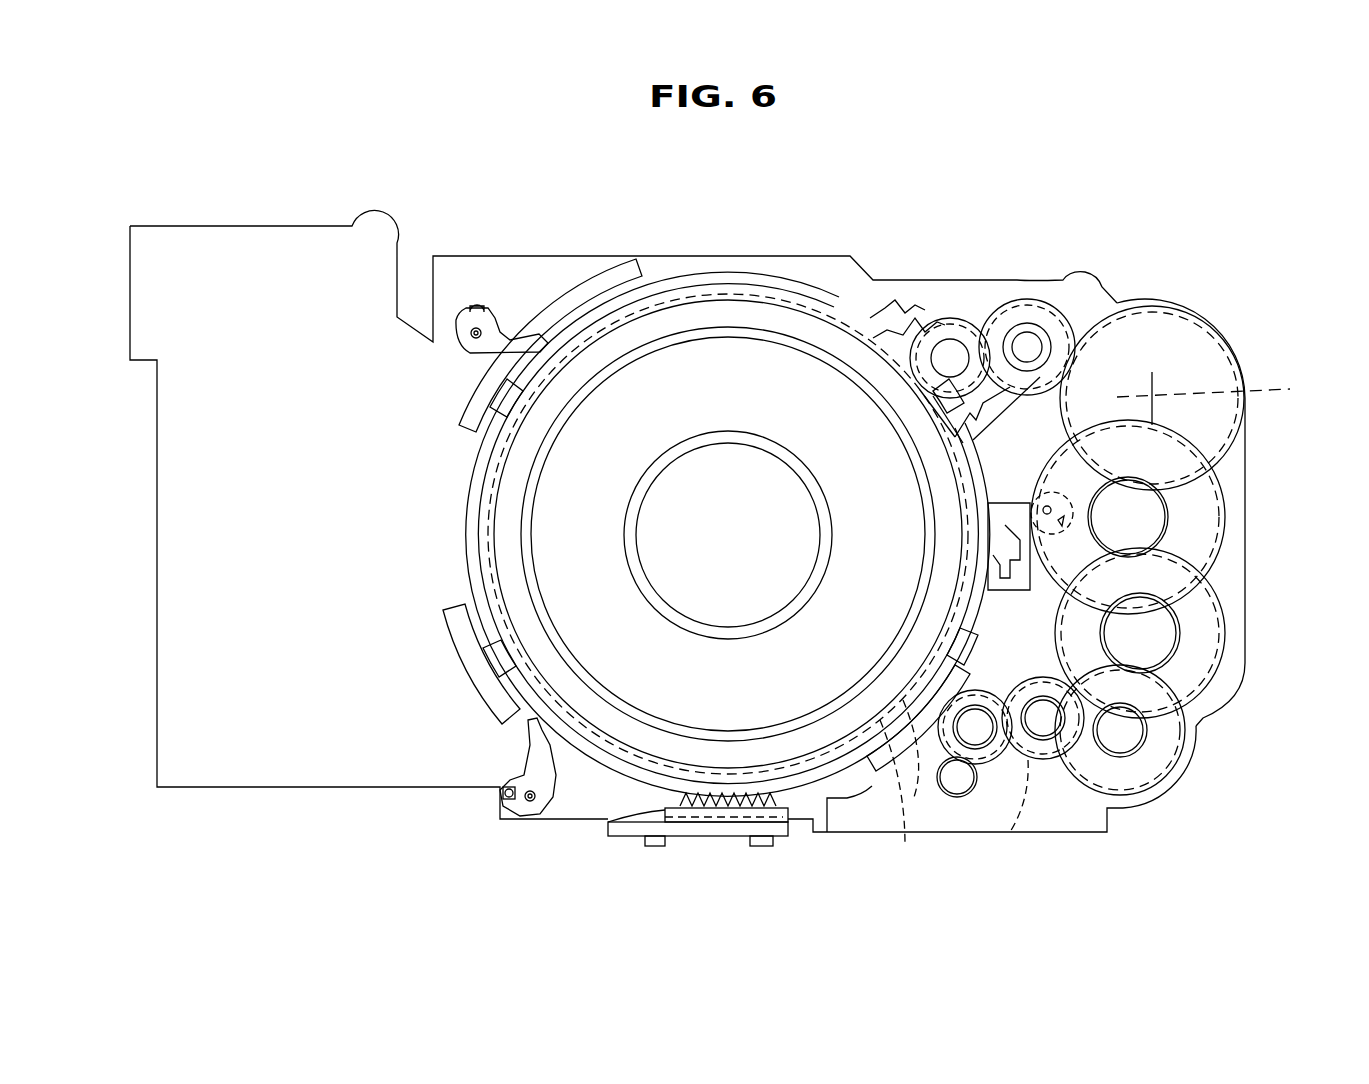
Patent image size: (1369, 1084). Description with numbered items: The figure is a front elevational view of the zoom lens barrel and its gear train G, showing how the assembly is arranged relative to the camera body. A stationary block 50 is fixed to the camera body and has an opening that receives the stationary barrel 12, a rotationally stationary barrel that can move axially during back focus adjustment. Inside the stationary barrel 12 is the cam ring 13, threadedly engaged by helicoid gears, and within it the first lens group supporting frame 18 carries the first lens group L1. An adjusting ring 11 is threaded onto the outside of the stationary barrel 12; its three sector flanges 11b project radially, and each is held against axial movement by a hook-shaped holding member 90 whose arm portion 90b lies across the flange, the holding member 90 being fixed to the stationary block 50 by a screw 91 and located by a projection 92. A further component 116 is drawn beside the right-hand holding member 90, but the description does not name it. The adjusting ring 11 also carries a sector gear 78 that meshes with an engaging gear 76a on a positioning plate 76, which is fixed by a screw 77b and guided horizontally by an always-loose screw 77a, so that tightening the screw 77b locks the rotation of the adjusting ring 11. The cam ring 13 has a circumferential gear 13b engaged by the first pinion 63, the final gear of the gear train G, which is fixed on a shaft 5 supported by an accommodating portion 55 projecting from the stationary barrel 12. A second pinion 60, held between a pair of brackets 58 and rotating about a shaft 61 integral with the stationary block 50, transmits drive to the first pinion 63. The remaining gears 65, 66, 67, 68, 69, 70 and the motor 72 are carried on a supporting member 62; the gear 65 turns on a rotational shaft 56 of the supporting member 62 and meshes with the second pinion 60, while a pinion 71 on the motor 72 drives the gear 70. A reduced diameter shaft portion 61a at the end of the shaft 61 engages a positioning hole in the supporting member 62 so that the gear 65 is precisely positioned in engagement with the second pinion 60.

The stationary block 50 is at (352, 212).
The adjusting ring 11 is at (672, 365).
The sector flange 11b is at (562, 300).
The stationary barrel 12 is at (778, 285).
The cam ring 13 is at (745, 282).
The circumferential gear 13b is at (895, 322).
The first lens group supporting frame 18 is at (737, 362).
The first lens group L1 is at (710, 487).
The holding member 90 is at (470, 338).
The arm portion 90b is at (575, 385).
The screw 91 is at (470, 340).
The projection 92 is at (478, 310).
The engaging member 116 is at (1010, 605).
The shaft 5 is at (985, 335).
The accommodating portion 55 is at (925, 345).
The rotational shaft 56 is at (1240, 388).
The bracket 58 is at (1027, 347).
The second pinion 60 is at (1043, 357).
The shaft 61 is at (1087, 275).
The reduced diameter shaft portion 61a is at (1040, 320).
The supporting member 62 is at (1245, 587).
The first pinion 63 is at (945, 355).
The gear 65 is at (1193, 358).
The gear 66 is at (1205, 520).
The gear 67 is at (1195, 640).
The gear 68 is at (1180, 733).
The gear 69 is at (1085, 770).
The gear 70 is at (1033, 765).
The pinion 71 is at (960, 792).
The motor 72 is at (905, 840).
The positioning plate 76 is at (715, 840).
The engaging gear 76a is at (610, 820).
The screw 77a is at (652, 846).
The screw 77b is at (773, 846).
The sector gear 78 is at (775, 795).
The gear train G is at (1192, 298).